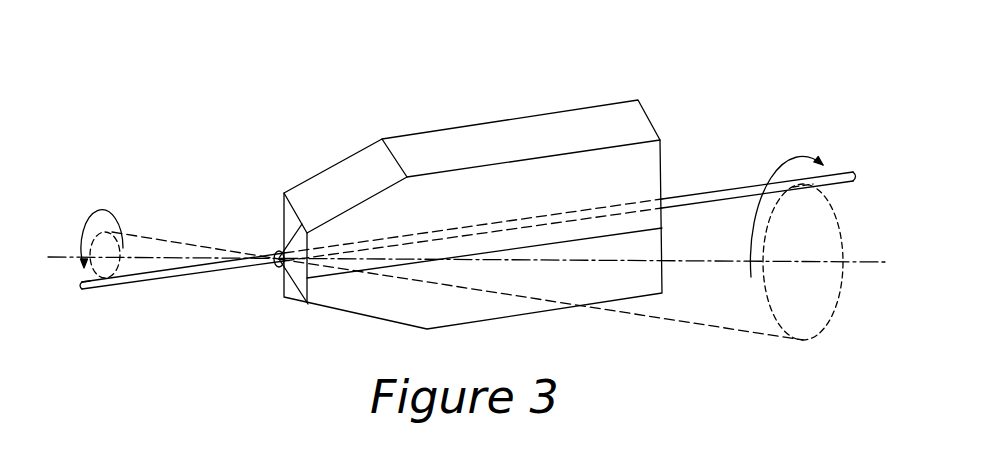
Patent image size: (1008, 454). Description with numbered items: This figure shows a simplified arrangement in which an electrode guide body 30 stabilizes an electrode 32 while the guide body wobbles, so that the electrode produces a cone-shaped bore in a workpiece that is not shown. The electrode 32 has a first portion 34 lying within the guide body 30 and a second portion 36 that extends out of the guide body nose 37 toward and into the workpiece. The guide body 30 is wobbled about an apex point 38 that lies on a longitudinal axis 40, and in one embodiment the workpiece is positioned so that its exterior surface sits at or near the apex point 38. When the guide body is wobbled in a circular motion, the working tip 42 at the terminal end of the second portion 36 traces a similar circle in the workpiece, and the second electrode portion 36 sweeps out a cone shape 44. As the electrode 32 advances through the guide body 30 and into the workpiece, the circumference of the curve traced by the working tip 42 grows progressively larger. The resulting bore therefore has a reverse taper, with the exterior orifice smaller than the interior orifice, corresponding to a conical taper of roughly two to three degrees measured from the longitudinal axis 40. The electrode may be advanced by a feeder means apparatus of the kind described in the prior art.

The electrode guide body 30 is at (553, 325).
The electrode 32 is at (718, 190).
The first portion 34 is at (467, 227).
The second portion 36 is at (280, 297).
The guide body nose 37 is at (291, 303).
The apex point 38 is at (274, 256).
The longitudinal axis 40 is at (65, 245).
The working tip 42 is at (82, 285).
The cone shape 44 is at (187, 228).